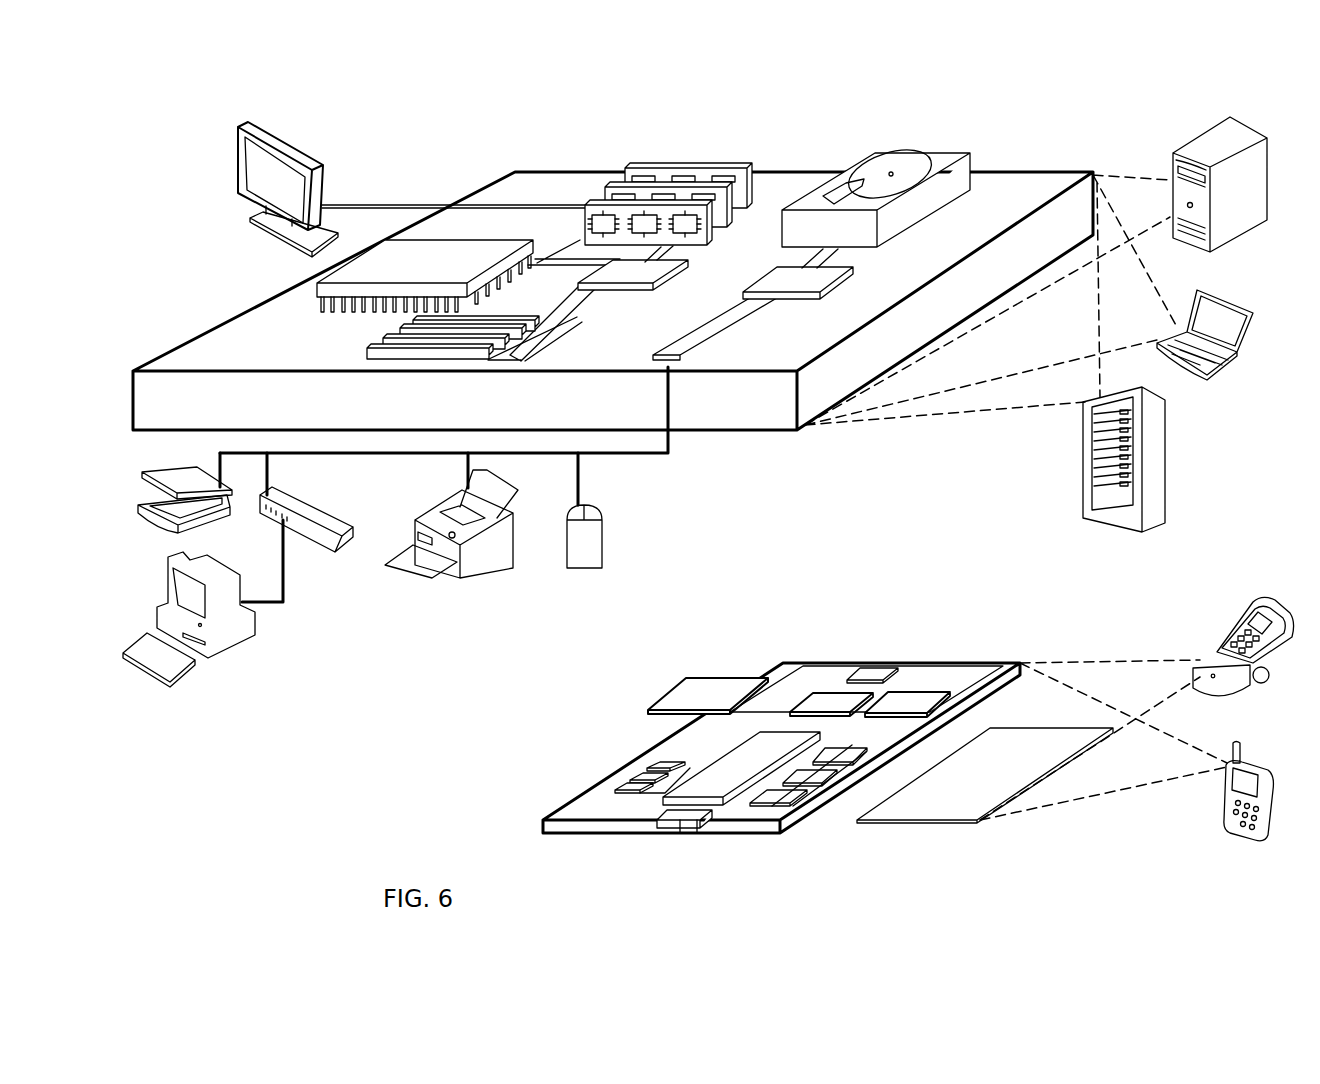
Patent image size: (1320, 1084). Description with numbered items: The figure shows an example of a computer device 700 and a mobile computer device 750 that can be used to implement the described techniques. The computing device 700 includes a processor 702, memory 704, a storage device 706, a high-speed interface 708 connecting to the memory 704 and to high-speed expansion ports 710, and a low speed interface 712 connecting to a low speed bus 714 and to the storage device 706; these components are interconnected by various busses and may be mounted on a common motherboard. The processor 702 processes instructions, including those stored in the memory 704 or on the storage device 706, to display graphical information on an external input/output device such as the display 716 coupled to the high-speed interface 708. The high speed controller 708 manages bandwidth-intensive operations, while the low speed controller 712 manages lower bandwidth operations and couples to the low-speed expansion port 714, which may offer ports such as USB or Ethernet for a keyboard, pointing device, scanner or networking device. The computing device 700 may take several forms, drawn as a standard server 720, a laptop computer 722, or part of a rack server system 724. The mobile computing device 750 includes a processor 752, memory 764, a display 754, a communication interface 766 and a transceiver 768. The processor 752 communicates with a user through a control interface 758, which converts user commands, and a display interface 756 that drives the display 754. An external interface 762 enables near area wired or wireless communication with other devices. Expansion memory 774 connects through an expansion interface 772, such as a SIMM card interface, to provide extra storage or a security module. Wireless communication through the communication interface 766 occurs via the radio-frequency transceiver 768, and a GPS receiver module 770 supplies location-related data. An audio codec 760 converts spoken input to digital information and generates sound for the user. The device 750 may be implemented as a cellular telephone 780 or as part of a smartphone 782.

The computing device 700 is at (442, 150).
The processor 702 is at (317, 290).
The memory 704 is at (640, 168).
The storage device 706 is at (870, 163).
The high-speed interface 708 is at (606, 270).
The high-speed expansion ports 710 is at (383, 338).
The low speed interface 712 is at (797, 273).
The low speed bus 714 is at (672, 368).
The display 716 is at (233, 133).
The standard server 720 is at (1172, 168).
The laptop computer 722 is at (1199, 302).
The rack server system 724 is at (1084, 495).
The mobile computer device 750 is at (764, 644).
The processor 752 is at (720, 806).
The display 754 is at (985, 823).
The display interface 756 is at (785, 806).
The control interface 758 is at (810, 787).
The audio codec 760 is at (838, 765).
The external interface 762 is at (678, 824).
The memory 764 is at (638, 786).
The communication interface 766 is at (832, 705).
The transceiver 768 is at (905, 703).
The GPS receiver module 770 is at (875, 672).
The expansion interface 772 is at (750, 677).
The expansion memory 774 is at (690, 679).
The cellular telephone 780 is at (1250, 610).
The smartphone 782 is at (1234, 743).